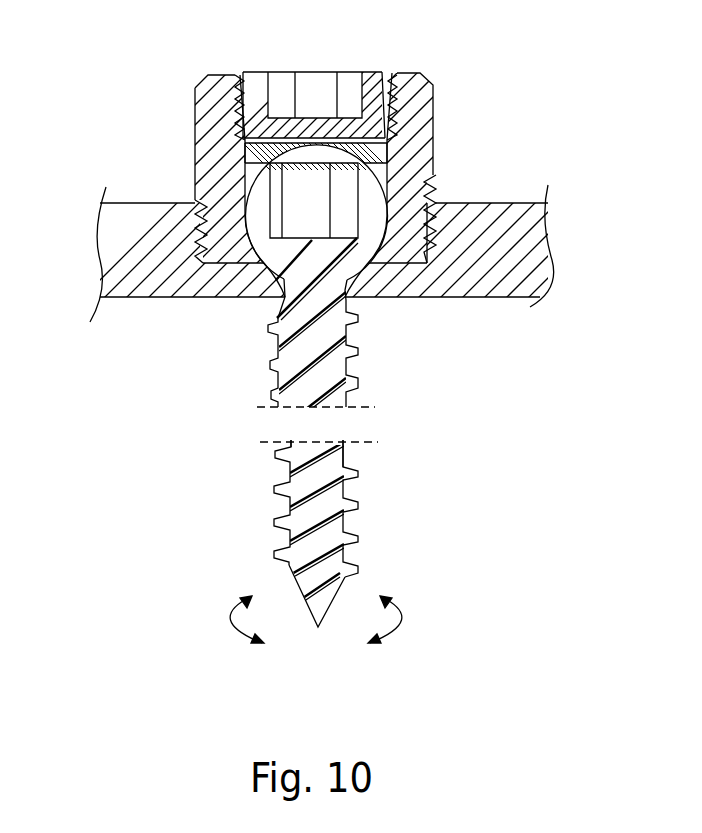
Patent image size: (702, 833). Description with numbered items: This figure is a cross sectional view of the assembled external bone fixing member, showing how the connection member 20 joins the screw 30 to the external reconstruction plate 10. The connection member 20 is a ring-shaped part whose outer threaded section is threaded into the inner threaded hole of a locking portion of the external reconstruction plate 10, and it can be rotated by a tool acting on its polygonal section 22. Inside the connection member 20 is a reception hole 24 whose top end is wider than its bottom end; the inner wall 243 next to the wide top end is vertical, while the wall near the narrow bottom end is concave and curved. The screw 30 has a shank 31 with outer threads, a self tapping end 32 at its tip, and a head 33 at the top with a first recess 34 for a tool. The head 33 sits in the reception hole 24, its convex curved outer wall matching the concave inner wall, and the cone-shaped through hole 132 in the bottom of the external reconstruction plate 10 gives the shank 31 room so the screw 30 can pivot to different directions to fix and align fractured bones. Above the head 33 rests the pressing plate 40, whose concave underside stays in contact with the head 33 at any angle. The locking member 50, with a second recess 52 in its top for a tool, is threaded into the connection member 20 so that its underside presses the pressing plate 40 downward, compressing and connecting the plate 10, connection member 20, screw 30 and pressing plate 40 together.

The external reconstruction plate 10 is at (158, 200).
The connection member 20 is at (413, 70).
The polygonal section 22 is at (387, 152).
The reception hole 24 is at (386, 197).
The screw 30 is at (272, 468).
The shank 31 is at (358, 502).
The self tapping end 32 is at (318, 627).
The head 33 is at (270, 228).
The first recess 34 is at (333, 212).
The pressing plate 40 is at (425, 112).
The locking member 50 is at (262, 92).
The second recess 52 is at (305, 82).
The through hole 132 is at (262, 298).
The inner wall 243 is at (256, 196).